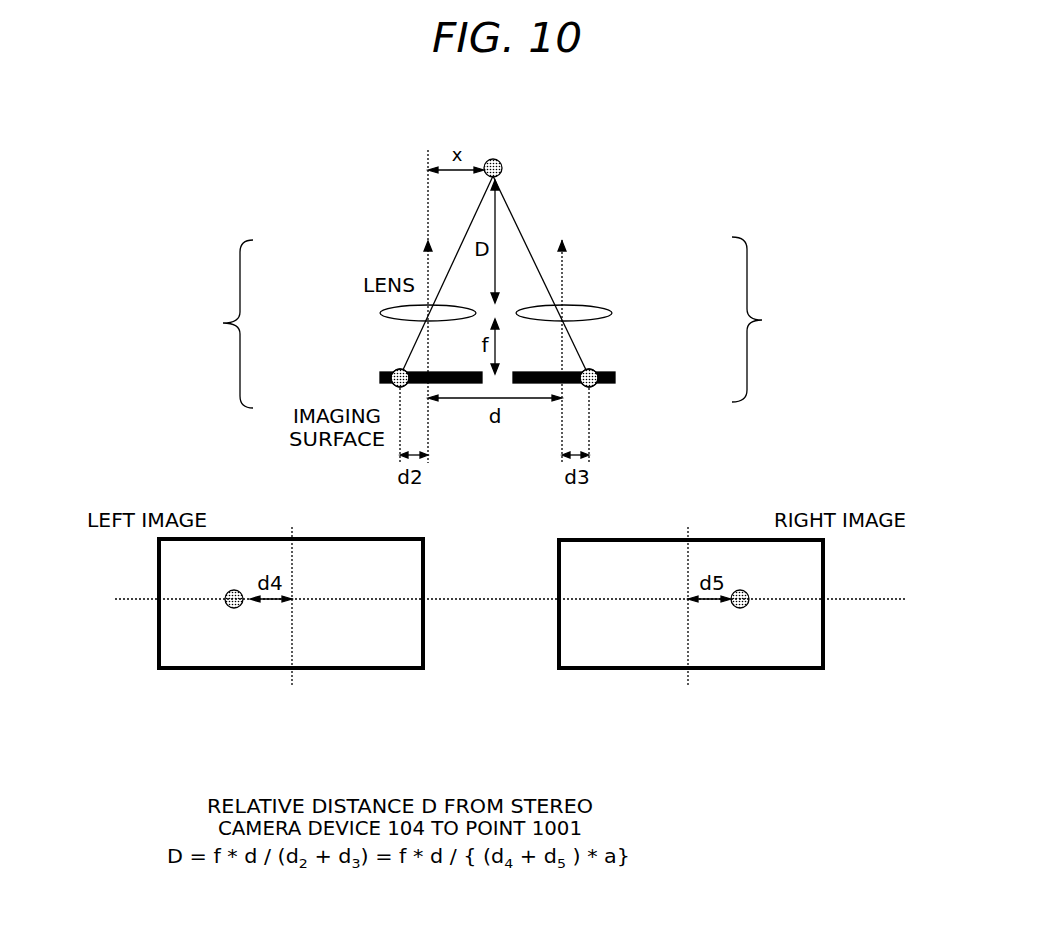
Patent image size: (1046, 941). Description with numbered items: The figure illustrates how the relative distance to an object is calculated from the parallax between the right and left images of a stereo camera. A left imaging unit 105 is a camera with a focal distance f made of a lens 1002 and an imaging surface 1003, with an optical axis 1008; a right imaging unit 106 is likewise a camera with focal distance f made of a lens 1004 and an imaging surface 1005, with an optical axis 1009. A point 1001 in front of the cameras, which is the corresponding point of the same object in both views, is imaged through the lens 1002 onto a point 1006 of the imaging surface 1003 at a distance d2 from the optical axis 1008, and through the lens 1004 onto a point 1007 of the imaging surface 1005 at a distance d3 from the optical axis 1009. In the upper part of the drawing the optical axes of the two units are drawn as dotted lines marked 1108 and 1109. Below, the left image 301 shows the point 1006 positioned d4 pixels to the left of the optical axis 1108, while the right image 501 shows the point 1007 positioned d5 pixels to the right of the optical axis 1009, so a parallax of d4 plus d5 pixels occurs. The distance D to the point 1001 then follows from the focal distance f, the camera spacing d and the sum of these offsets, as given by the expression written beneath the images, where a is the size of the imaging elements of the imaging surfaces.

The point 1001 is at (503, 165).
The lens 1002 is at (380, 312).
The imaging surface 1003 is at (381, 377).
The lens 1004 is at (613, 312).
The imaging surface 1005 is at (616, 378).
The point 1006 is at (405, 388).
The point 1007 is at (596, 387).
The optical axis 1008 is at (293, 592).
The optical axis 1009 is at (687, 592).
The optical axis 1108 is at (424, 250).
The optical axis of right imaging unit 1109 is at (566, 262).
The left imaging unit 105 is at (166, 324).
The right imaging unit 106 is at (820, 319).
The left image 301 is at (357, 669).
The right image 501 is at (617, 669).